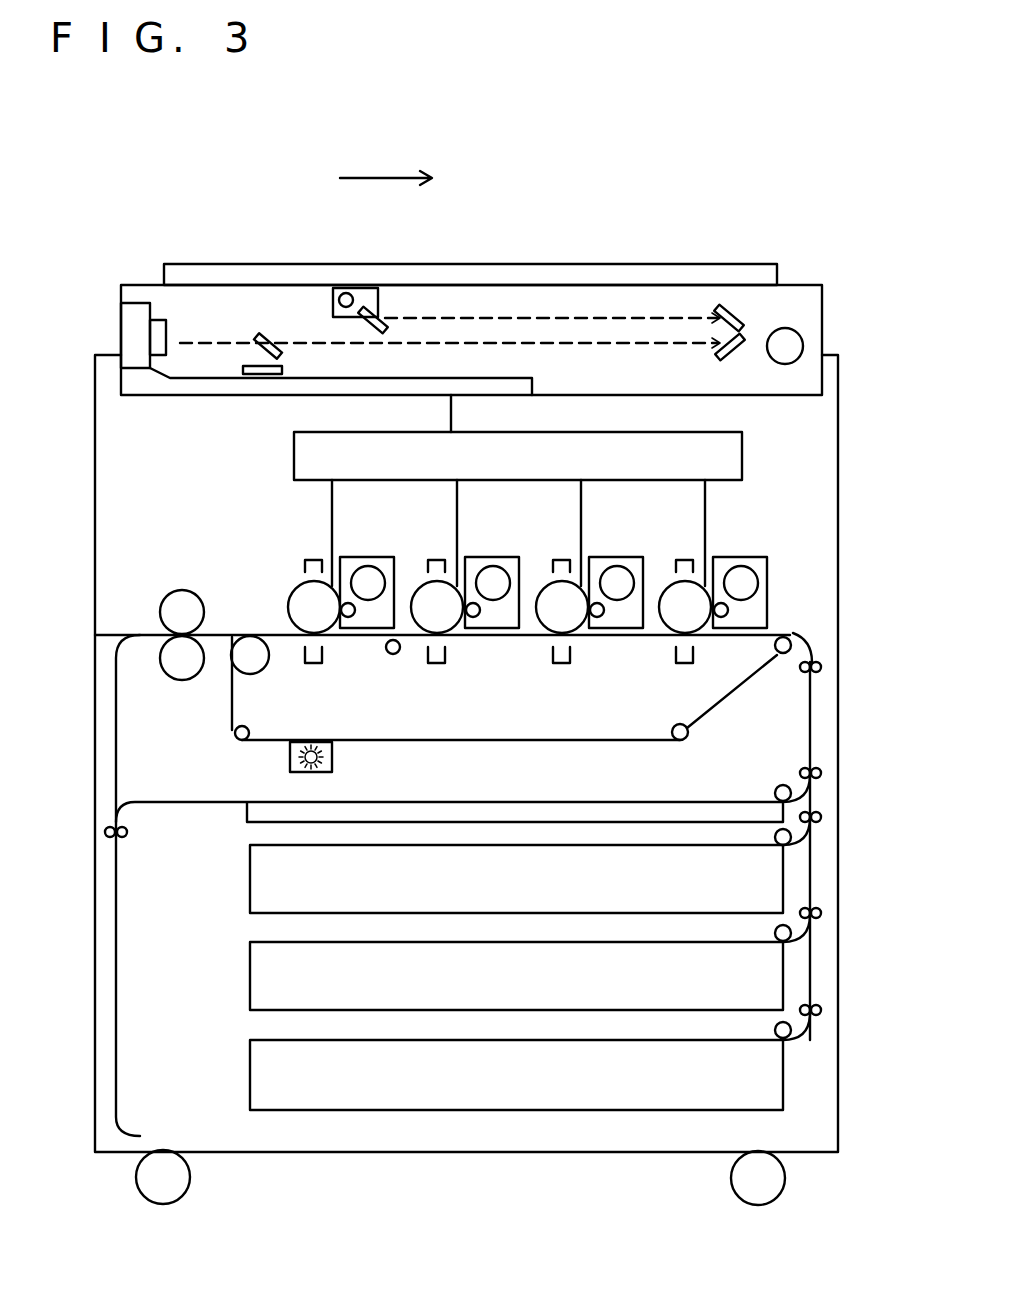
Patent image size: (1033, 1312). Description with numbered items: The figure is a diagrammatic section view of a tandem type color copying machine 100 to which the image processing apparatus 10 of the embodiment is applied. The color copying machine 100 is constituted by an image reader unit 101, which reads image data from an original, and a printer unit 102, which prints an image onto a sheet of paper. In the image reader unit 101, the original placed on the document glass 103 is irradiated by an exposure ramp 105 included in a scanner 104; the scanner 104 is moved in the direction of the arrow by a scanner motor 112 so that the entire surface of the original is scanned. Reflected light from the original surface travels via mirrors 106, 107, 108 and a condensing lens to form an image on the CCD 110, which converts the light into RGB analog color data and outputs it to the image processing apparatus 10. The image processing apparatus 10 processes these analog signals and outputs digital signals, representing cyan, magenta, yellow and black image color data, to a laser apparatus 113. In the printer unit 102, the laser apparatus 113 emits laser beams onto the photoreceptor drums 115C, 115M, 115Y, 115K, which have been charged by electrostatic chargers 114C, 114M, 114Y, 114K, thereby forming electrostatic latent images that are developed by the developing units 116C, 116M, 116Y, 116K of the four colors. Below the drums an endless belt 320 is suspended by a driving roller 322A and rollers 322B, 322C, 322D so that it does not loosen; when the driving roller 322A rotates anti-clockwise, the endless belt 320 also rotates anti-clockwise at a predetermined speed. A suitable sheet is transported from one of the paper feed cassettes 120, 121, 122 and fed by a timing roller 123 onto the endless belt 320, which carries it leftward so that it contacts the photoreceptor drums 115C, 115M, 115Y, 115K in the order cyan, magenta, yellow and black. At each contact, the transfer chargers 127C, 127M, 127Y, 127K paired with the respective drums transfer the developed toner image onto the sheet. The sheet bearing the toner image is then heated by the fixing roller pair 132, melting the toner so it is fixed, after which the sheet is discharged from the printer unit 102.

The color copying machine 100 is at (850, 143).
The image reader unit 101 is at (813, 307).
The printer unit 102 is at (838, 505).
The document glass 103 is at (485, 275).
The scanner 104 is at (365, 308).
The exposure ramp 105 is at (345, 292).
The mirror 106 is at (722, 305).
The mirror 107 is at (738, 335).
The mirror 108 is at (262, 337).
The CCD 110 is at (250, 366).
The scanner motor 112 is at (790, 342).
The laser apparatus 113 is at (738, 450).
The image processing apparatus 10 is at (224, 387).
The electrostatic charger 114K is at (312, 558).
The electrostatic charger 114Y is at (443, 558).
The electrostatic charger 114M is at (568, 558).
The electrostatic charger 114C is at (691, 558).
The developing unit 116K is at (360, 557).
The developing unit 116Y is at (483, 557).
The developing unit 116M is at (607, 557).
The developing unit 116C is at (743, 557).
The photoreceptor drum 115K is at (296, 650).
The photoreceptor drum 115Y is at (421, 638).
The photoreceptor drum 115M is at (545, 640).
The photoreceptor drum 115C is at (668, 640).
The transfer charger 127K is at (325, 668).
The transfer charger 127Y is at (448, 666).
The transfer charger 127M is at (572, 666).
The transfer charger 127C is at (695, 666).
The endless belt 320 is at (507, 742).
The driving roller 322A is at (243, 662).
The roller 322B is at (237, 743).
The roller 322C is at (682, 739).
The roller 322D is at (782, 657).
The fixing roller pair 132 is at (173, 667).
The timing roller 123 is at (820, 667).
The paper feed cassette 120 is at (248, 877).
The paper feed cassette 121 is at (248, 970).
The paper feed cassette 122 is at (248, 1065).